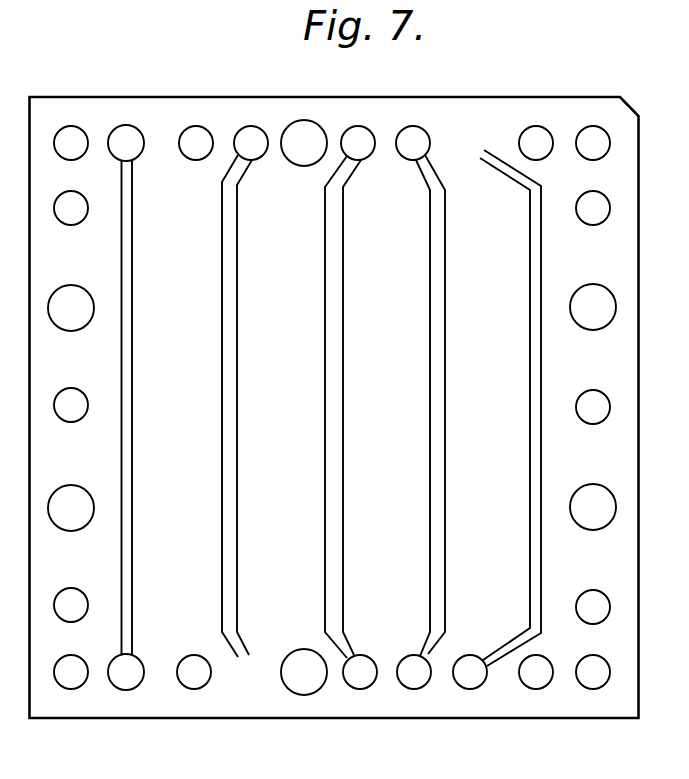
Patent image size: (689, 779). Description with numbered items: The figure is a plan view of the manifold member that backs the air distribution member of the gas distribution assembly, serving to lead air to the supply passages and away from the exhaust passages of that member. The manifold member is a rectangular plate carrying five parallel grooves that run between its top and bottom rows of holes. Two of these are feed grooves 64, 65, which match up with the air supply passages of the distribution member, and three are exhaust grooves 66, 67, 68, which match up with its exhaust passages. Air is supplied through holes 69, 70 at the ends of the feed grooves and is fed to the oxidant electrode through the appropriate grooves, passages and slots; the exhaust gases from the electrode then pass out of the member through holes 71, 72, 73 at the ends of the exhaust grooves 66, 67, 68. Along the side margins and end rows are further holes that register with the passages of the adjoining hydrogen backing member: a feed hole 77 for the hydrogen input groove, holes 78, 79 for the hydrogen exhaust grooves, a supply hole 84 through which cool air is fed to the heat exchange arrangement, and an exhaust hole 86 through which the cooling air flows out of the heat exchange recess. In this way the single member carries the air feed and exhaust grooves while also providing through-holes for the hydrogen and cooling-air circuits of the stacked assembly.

The feed groove 64 is at (232, 422).
The feed groove 65 is at (440, 475).
The exhaust groove 66 is at (128, 413).
The exhaust groove 67 is at (338, 424).
The exhaust groove 68 is at (536, 372).
The air supply hole 69 is at (254, 138).
The air supply hole 70 is at (418, 138).
The exhaust hole 71 is at (132, 680).
The exhaust hole 72 is at (365, 682).
The exhaust hole 73 is at (473, 678).
The feed hole 77 is at (73, 403).
The exhaust hole 78 is at (73, 223).
The exhaust hole 79 is at (73, 600).
The supply hole 84 is at (312, 138).
The exhaust hole 86 is at (76, 498).